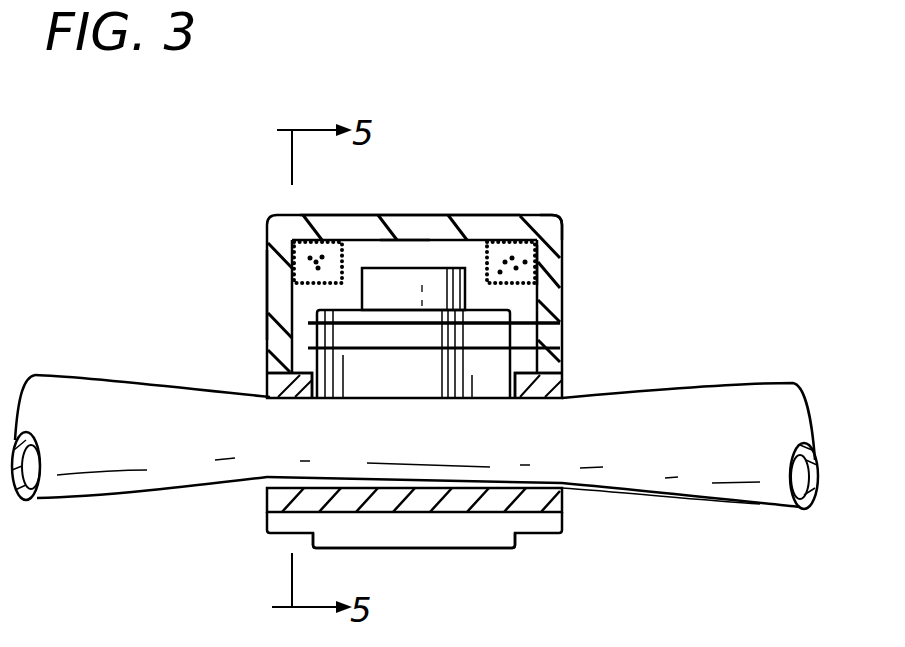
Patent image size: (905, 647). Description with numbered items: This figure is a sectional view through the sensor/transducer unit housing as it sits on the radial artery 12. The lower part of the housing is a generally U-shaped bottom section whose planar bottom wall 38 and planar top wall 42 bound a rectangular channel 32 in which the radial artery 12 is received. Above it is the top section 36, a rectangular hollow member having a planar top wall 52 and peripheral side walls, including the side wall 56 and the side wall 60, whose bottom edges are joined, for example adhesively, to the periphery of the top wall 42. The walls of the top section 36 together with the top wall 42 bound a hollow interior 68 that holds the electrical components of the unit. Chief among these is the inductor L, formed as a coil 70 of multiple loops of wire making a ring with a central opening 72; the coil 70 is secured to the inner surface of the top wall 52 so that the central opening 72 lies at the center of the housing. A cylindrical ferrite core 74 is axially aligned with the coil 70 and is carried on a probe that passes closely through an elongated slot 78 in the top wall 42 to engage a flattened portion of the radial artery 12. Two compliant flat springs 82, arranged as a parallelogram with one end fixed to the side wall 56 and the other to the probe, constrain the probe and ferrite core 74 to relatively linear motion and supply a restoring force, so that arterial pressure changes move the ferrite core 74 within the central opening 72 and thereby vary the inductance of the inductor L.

The radial artery 12 is at (727, 405).
The rectangular channel 32 is at (560, 513).
The top section 36 is at (498, 218).
The bottom wall 38 is at (488, 507).
The top wall 42 is at (547, 382).
The top wall 52 is at (403, 217).
The side wall 56 is at (552, 292).
The side wall 60 is at (278, 302).
The hollow interior 68 is at (302, 335).
The coil 70 is at (560, 218).
The central opening 72 is at (358, 262).
The ferrite core 74 is at (413, 277).
The elongated slot 78 is at (295, 383).
The compliant flat springs 82 is at (372, 328).
The inductor L is at (542, 262).